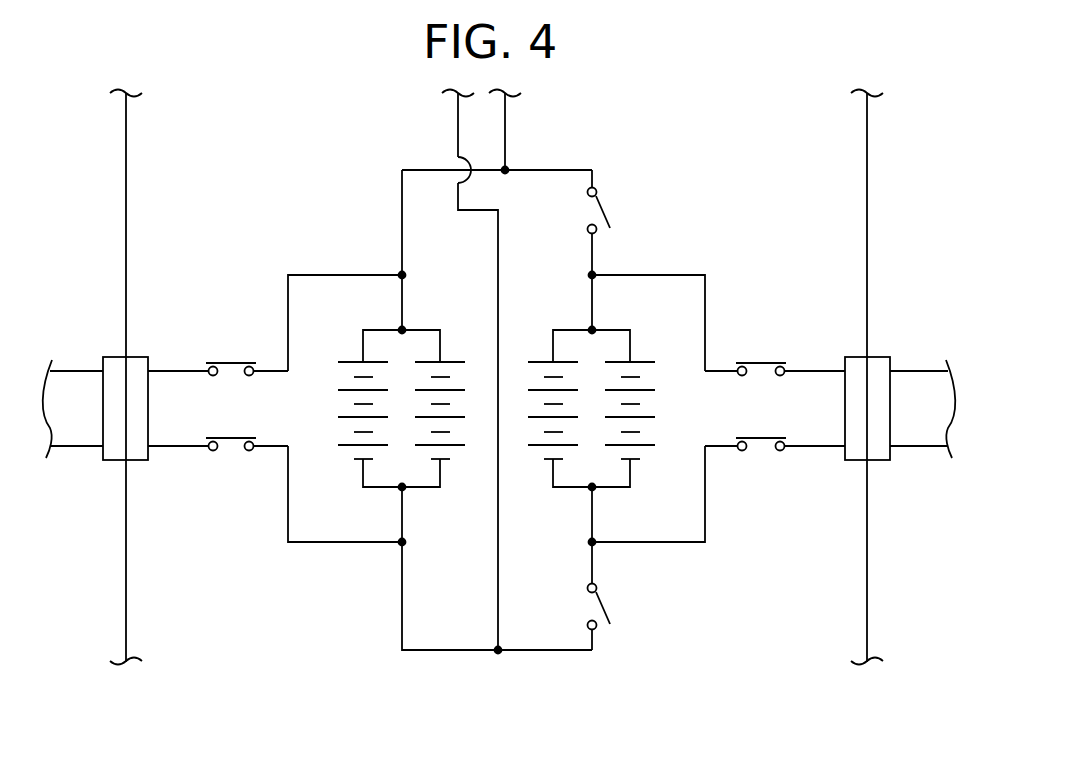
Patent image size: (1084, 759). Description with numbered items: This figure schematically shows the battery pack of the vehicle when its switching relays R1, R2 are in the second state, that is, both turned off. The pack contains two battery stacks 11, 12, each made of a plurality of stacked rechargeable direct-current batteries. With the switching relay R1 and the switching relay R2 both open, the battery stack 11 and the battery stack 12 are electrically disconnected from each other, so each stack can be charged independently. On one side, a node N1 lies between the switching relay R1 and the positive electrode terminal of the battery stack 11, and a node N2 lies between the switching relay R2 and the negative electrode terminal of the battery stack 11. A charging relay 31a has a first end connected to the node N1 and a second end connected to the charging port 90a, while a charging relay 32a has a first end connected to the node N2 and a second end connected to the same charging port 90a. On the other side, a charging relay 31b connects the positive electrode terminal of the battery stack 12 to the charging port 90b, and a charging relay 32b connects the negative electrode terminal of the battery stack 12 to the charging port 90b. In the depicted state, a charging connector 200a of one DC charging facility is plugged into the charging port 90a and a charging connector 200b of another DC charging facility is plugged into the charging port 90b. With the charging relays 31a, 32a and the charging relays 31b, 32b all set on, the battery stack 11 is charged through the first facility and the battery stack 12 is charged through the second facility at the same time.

The battery stack 11 is at (616, 329).
The battery stack 12 is at (378, 329).
The charging relay 31a is at (765, 362).
The charging relay 32a is at (765, 437).
The charging relay 31b is at (228, 362).
The charging relay 32b is at (228, 437).
The charging port 90a is at (850, 356).
The charging port 90b is at (145, 356).
The charging connector 200a is at (884, 356).
The charging connector 200b is at (108, 356).
The switching relay R1 is at (607, 207).
The switching relay R2 is at (607, 603).
The node N1 is at (573, 279).
The node N2 is at (573, 544).